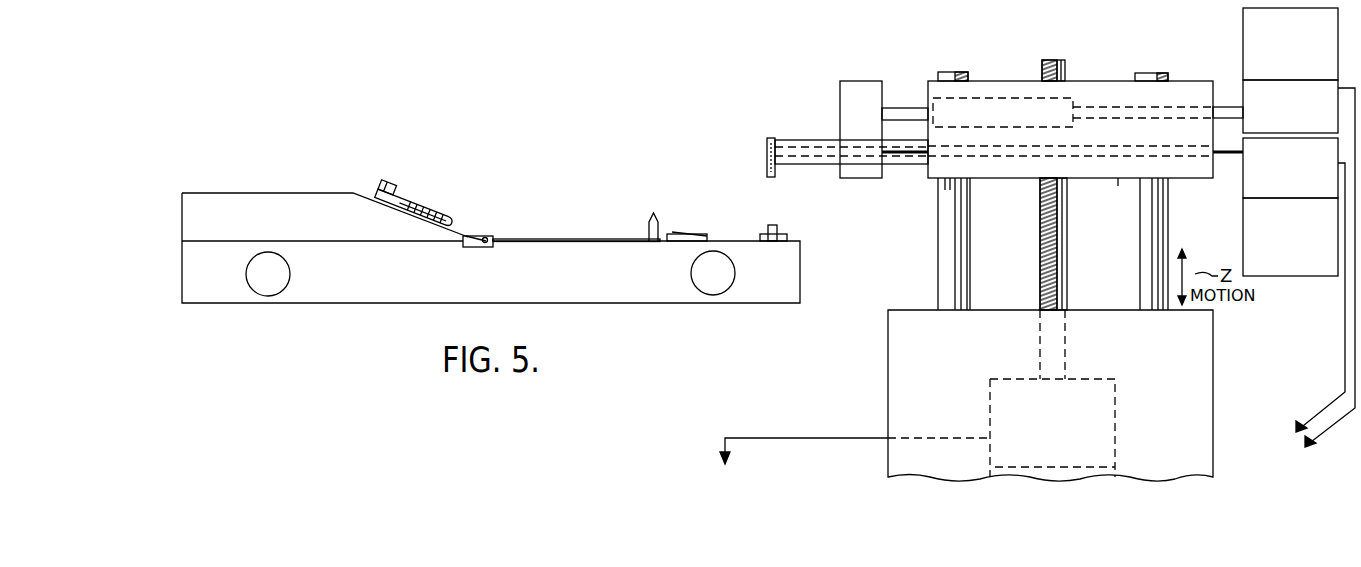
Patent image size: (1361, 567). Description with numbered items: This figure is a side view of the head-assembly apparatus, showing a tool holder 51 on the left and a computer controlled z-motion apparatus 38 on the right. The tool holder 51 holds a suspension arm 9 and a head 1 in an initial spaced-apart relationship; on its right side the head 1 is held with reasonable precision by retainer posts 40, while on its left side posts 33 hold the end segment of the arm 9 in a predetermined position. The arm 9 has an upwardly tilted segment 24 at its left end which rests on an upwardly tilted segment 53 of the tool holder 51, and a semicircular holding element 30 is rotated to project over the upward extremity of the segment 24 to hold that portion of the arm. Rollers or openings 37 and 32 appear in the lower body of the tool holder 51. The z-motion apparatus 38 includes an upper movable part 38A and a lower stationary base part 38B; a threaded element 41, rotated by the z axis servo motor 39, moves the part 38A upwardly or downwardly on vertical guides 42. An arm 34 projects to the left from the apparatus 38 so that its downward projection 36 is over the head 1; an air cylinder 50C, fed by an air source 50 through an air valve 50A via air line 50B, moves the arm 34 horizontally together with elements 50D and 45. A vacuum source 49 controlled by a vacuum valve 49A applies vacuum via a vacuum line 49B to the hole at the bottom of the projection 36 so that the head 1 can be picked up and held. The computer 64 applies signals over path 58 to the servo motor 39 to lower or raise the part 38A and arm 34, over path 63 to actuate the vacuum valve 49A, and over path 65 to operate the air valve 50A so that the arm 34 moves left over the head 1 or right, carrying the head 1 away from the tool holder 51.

The head 1 is at (768, 238).
The suspension arm 9 is at (548, 239).
The upwardly tilted segment 24 is at (478, 236).
The semicircular holding element 30 is at (432, 203).
The roller 32 is at (706, 292).
The posts 33 is at (651, 230).
The arm 34 is at (830, 140).
The downward projection 36 is at (767, 158).
The roller 37 is at (290, 274).
The z-motion apparatus 38 is at (1115, 81).
The upper movable part 38A is at (1118, 178).
The lower stationary base part 38B is at (1192, 380).
The z axis servo motor 39 is at (1066, 465).
The retainer posts 40 is at (779, 236).
The threaded element 41 is at (1076, 33).
The vertical guides 42 is at (965, 48).
The element 45 is at (856, 81).
The vacuum source 49 is at (1304, 271).
The vacuum valve 49A is at (1314, 189).
The vacuum line 49B is at (910, 158).
The air source 50 is at (1304, 75).
The air valve 50A is at (1314, 127).
The air line 50B is at (1222, 106).
The air cylinder 50C is at (1008, 100).
The element 50D is at (900, 107).
The tool holder 51 is at (538, 282).
The upwardly tilted segment 53 is at (363, 191).
The path 58 is at (768, 438).
The path 63 is at (1345, 322).
The computer 64 is at (996, 474).
The path 65 is at (1345, 362).